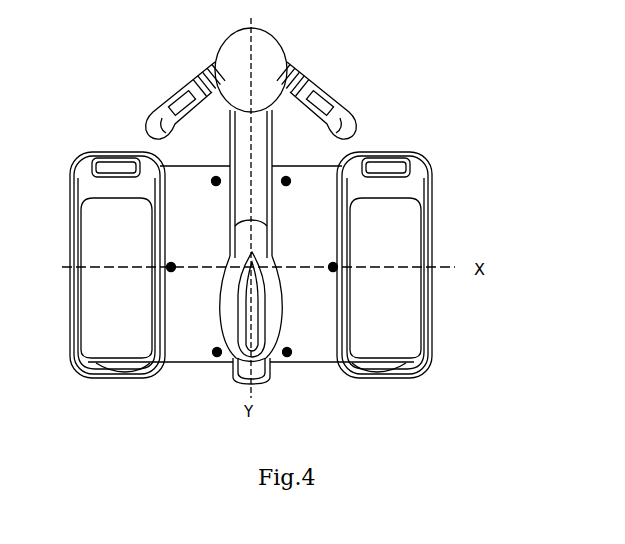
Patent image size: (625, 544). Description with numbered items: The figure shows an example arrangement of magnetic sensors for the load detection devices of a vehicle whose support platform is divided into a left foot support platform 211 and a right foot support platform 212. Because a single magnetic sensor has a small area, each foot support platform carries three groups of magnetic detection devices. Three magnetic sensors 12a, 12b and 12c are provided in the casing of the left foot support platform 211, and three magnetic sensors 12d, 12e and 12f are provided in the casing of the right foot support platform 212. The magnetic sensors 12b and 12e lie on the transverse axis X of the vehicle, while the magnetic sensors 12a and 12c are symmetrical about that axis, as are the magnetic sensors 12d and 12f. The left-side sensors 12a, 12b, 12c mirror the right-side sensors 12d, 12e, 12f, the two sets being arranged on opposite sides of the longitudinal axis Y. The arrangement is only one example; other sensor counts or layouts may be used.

The magnetic sensor 12a is at (213, 177).
The magnetic sensor 12b is at (174, 263).
The magnetic sensor 12c is at (214, 347).
The magnetic sensor 12d is at (289, 177).
The magnetic sensor 12e is at (330, 263).
The magnetic sensor 12f is at (290, 347).
The left foot support platform 211 is at (188, 361).
The right foot support platform 212 is at (320, 358).